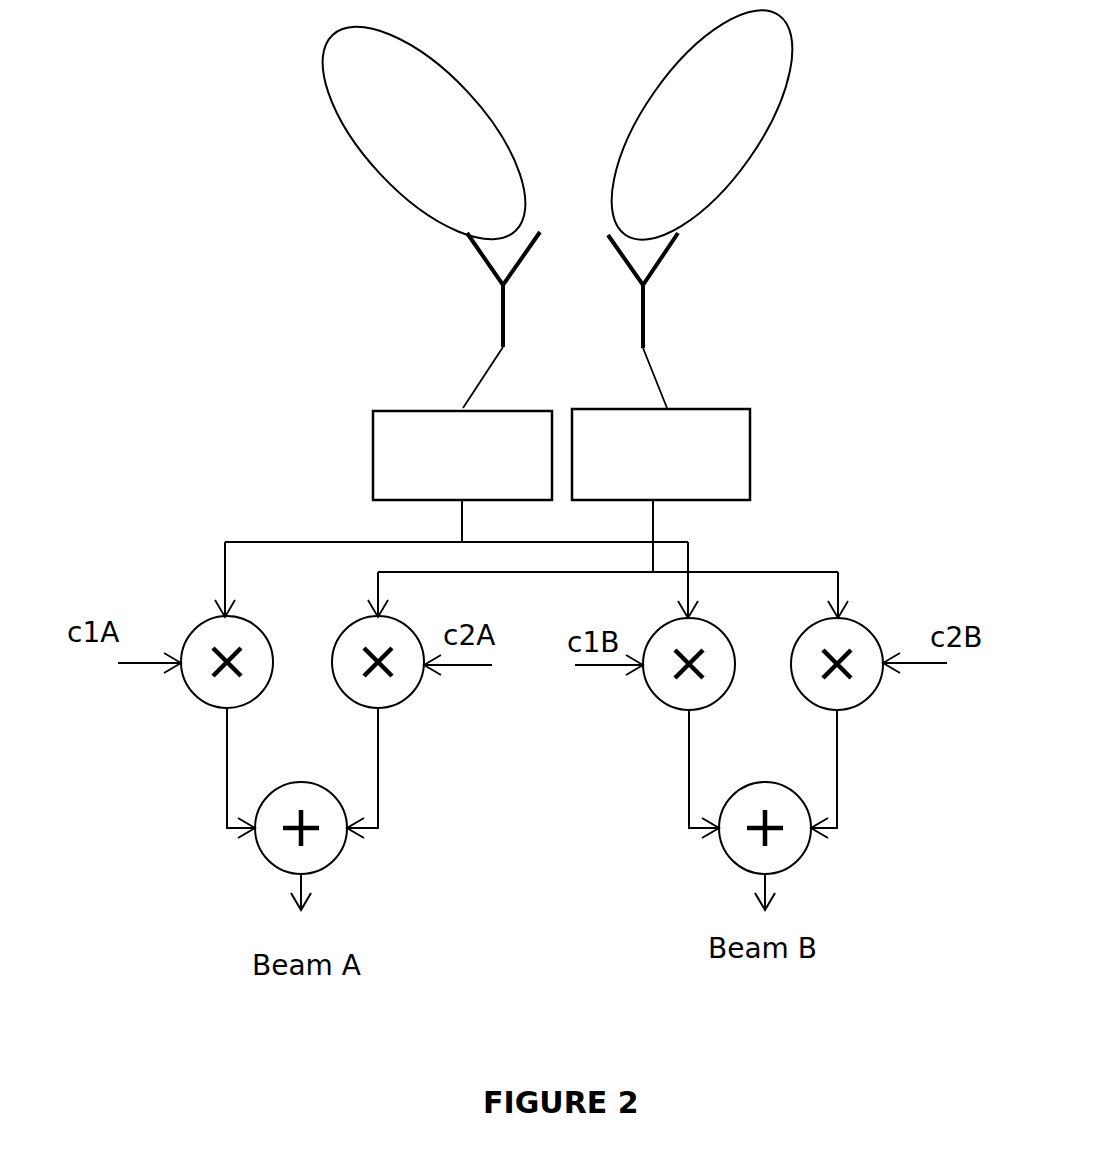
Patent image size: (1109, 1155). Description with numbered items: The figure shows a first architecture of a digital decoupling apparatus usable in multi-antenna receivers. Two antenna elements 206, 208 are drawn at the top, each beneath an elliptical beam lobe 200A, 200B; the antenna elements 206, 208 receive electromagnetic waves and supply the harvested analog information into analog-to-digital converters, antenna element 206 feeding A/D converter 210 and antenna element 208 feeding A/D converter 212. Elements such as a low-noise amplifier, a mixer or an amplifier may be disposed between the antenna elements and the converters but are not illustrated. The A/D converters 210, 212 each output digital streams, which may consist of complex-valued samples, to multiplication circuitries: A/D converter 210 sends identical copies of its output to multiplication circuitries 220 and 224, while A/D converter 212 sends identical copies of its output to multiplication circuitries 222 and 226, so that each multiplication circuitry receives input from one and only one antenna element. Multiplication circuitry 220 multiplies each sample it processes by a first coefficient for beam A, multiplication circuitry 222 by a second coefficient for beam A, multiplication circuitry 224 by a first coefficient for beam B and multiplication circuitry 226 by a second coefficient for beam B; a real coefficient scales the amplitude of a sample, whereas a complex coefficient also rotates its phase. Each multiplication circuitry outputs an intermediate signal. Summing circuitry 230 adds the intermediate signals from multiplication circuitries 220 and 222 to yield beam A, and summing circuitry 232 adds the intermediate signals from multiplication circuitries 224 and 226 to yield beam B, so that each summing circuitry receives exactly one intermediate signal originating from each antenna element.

The first antenna beam pattern 200A is at (424, 136).
The second antenna beam pattern 200B is at (702, 134).
The antenna element 206 is at (503, 303).
The antenna element 208 is at (643, 303).
The A/D converter 210 is at (373, 458).
The A/D converter 212 is at (750, 480).
The multiplication circuitry 220 is at (204, 622).
The multiplication circuitry 222 is at (347, 625).
The multiplication circuitry 224 is at (658, 703).
The multiplication circuitry 226 is at (872, 628).
The summing circuitry 230 is at (338, 858).
The summing circuitry 232 is at (730, 857).